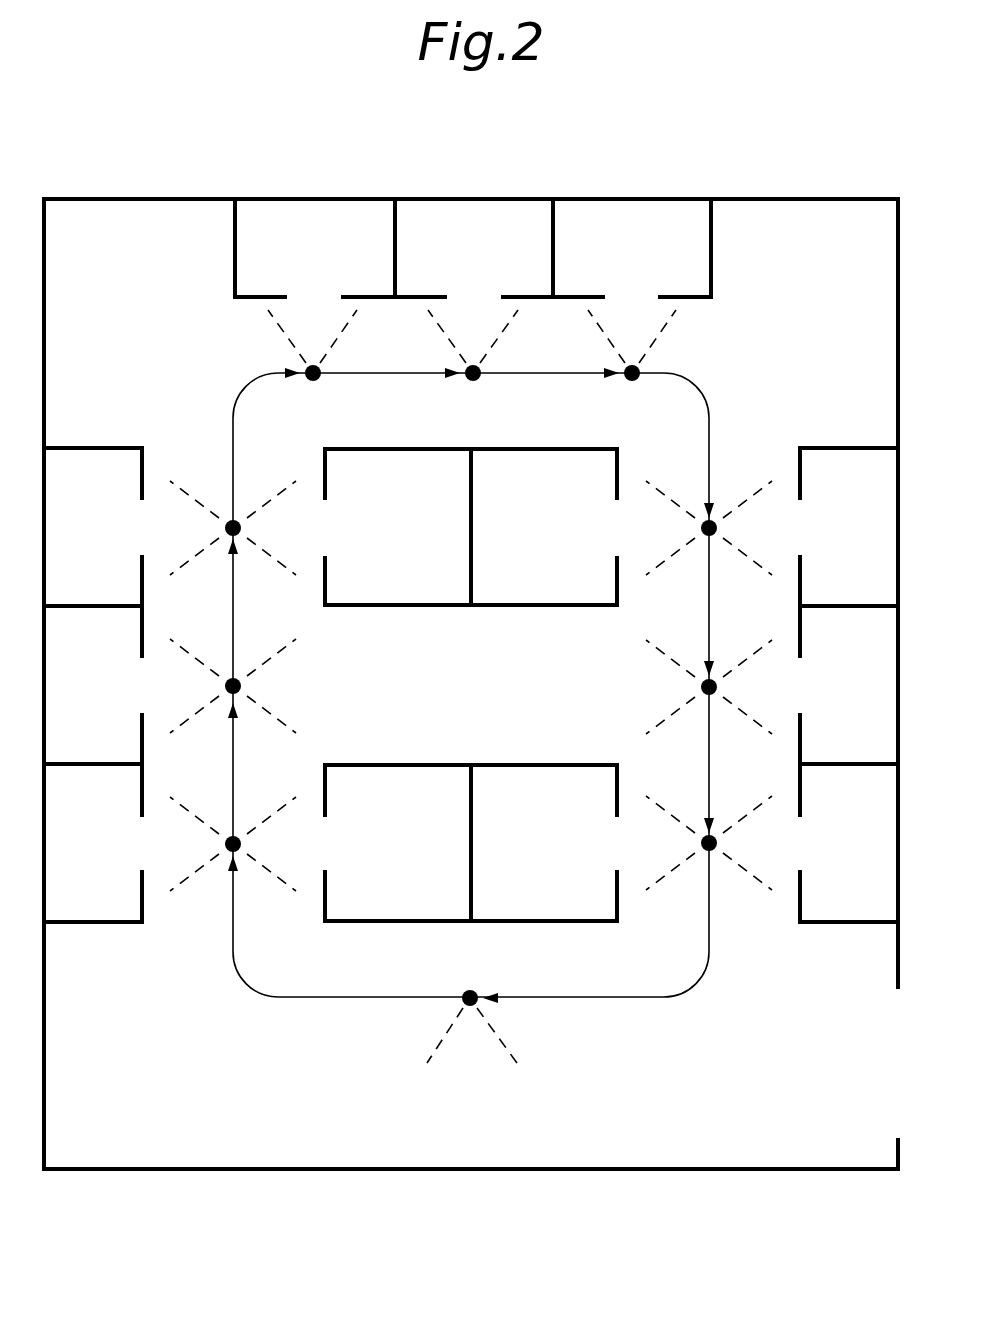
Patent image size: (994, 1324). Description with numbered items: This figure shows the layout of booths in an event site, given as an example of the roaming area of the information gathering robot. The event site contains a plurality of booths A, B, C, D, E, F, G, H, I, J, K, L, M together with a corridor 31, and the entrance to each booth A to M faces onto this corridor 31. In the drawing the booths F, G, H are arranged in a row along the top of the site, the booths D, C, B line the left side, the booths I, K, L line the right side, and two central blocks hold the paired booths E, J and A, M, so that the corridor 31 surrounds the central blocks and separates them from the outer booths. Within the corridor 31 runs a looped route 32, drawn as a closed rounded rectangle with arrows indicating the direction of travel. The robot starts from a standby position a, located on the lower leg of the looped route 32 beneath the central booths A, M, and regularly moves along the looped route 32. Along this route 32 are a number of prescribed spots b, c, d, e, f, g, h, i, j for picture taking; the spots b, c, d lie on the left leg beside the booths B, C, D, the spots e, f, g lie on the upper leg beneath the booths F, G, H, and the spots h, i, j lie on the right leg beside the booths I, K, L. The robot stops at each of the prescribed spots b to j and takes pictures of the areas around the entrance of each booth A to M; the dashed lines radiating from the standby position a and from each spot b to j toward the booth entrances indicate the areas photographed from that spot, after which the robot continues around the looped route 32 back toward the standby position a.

The corridor 31 is at (173, 1020).
The looped route 32 is at (293, 997).
The standby position a is at (469, 1041).
The prescribed spot for picture taking b is at (233, 844).
The prescribed spot for picture taking c is at (233, 685).
The prescribed spot for picture taking d is at (233, 527).
The prescribed spot for picture taking e is at (312, 358).
The prescribed spot for picture taking f is at (473, 358).
The prescribed spot for picture taking g is at (632, 357).
The prescribed spot for picture taking h is at (709, 528).
The prescribed spot for picture taking i is at (709, 687).
The prescribed spot for picture taking j is at (709, 843).
The booth A is at (398, 843).
The booth B is at (93, 843).
The booth C is at (93, 685).
The booth D is at (93, 527).
The booth E is at (398, 527).
The booth F is at (315, 248).
The booth G is at (474, 248).
The booth H is at (632, 248).
The booth I is at (849, 527).
The booth J is at (544, 527).
The booth K is at (849, 685).
The booth L is at (849, 843).
The booth M is at (544, 843).